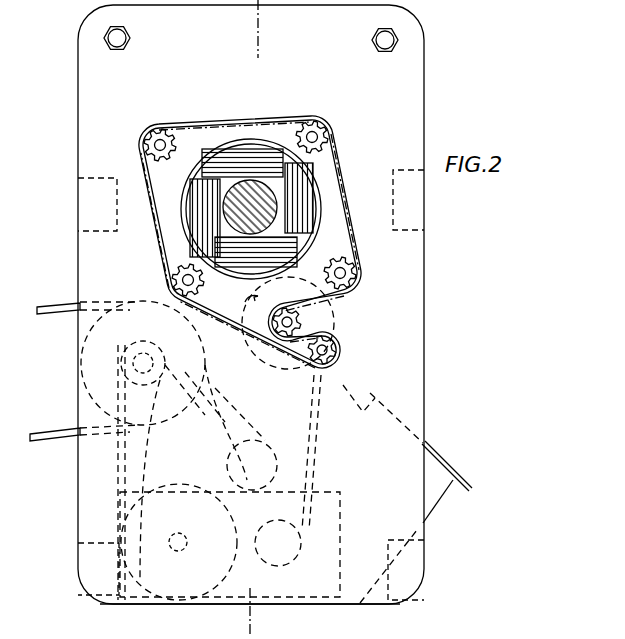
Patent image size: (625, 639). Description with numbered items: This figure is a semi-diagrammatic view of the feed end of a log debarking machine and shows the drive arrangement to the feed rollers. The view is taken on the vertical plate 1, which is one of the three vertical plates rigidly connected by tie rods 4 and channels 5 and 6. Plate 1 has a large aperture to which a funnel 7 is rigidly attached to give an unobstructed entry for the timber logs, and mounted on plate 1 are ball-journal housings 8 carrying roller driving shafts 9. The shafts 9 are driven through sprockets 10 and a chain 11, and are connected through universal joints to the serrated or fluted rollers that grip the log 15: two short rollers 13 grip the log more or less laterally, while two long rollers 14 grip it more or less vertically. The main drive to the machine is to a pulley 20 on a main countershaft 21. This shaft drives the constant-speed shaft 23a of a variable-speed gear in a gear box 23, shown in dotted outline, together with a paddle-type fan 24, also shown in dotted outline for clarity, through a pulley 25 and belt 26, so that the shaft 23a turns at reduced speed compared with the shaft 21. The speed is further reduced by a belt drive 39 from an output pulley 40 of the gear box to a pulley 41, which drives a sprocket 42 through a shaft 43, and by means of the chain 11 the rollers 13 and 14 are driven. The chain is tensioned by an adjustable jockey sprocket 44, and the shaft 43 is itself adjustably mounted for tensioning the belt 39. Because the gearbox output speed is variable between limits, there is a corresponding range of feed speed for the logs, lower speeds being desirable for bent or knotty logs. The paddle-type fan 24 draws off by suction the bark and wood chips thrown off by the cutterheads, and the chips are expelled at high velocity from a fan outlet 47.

The vertical plate 1 is at (425, 92).
The tie rods 4 is at (131, 38).
The channel 5 is at (80, 206).
The channel 6 is at (80, 579).
The funnel 7 is at (272, 207).
The ball-journal housings 8 is at (250, 620).
The roller driving shafts 9 is at (320, 124).
The sprockets 10 is at (150, 138).
The chain 11 is at (360, 220).
The short rollers 13 is at (200, 213).
The long rollers 14 is at (250, 148).
The log 15 is at (208, 181).
The pulley 20 is at (96, 326).
The main countershaft 21 is at (150, 378).
The gear box 23 is at (340, 493).
The constant-speed shaft 23a is at (188, 543).
The paddle-type fan 24 is at (347, 388).
The pulley 25 is at (120, 360).
The belt 26 is at (215, 402).
The belt drive 39 is at (318, 449).
The output pulley 40 is at (302, 543).
The pulley 41 is at (334, 304).
The sprocket 42 is at (272, 314).
The shaft 43 is at (303, 322).
The adjustable jockey sprocket 44 is at (340, 351).
The fan outlet 47 is at (446, 468).